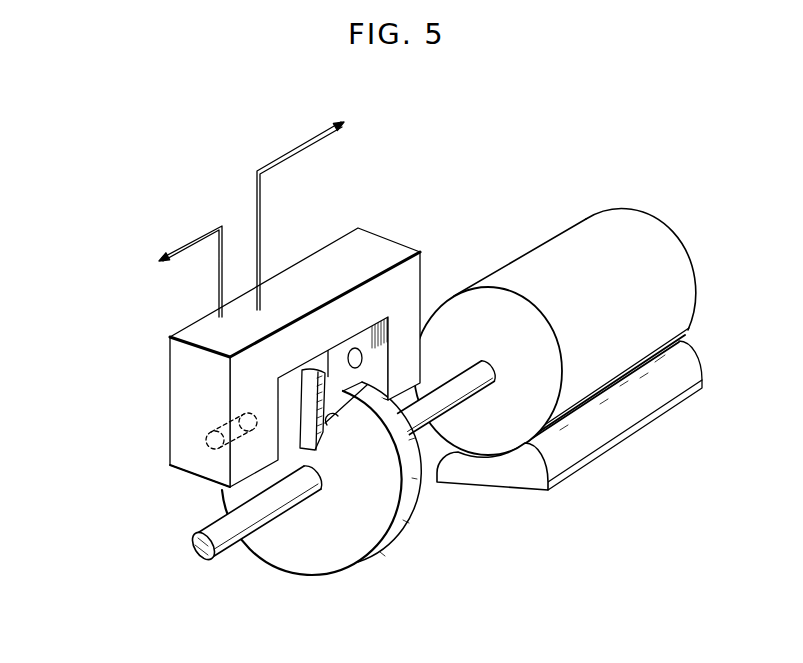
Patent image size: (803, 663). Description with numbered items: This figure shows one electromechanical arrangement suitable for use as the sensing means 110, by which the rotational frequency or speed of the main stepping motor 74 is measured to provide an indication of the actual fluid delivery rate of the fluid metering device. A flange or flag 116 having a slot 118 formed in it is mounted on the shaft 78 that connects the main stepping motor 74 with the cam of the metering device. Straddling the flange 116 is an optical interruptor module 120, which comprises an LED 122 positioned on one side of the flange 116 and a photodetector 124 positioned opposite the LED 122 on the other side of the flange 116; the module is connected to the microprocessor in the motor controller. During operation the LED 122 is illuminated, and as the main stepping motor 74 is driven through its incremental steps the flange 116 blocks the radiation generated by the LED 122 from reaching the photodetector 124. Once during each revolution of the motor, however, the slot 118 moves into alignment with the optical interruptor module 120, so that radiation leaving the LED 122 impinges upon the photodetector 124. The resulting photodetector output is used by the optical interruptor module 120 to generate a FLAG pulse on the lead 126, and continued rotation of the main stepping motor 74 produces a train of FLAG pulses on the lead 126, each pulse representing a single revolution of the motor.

The main stepping motor 74 is at (638, 227).
The shaft 78 is at (242, 532).
The sensing means 110 is at (231, 314).
The flange 116 is at (355, 535).
The slot 118 is at (327, 425).
The optical interruptor module 120 is at (231, 314).
The LED 122 is at (358, 350).
The photodetector 124 is at (208, 452).
The lead 126 is at (303, 142).